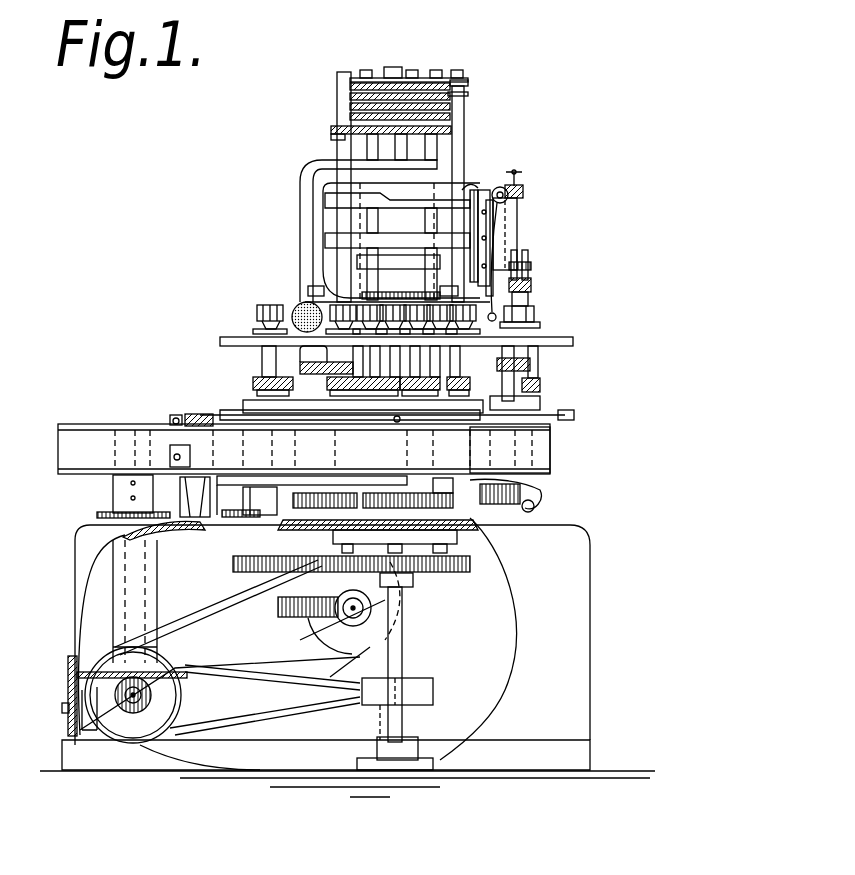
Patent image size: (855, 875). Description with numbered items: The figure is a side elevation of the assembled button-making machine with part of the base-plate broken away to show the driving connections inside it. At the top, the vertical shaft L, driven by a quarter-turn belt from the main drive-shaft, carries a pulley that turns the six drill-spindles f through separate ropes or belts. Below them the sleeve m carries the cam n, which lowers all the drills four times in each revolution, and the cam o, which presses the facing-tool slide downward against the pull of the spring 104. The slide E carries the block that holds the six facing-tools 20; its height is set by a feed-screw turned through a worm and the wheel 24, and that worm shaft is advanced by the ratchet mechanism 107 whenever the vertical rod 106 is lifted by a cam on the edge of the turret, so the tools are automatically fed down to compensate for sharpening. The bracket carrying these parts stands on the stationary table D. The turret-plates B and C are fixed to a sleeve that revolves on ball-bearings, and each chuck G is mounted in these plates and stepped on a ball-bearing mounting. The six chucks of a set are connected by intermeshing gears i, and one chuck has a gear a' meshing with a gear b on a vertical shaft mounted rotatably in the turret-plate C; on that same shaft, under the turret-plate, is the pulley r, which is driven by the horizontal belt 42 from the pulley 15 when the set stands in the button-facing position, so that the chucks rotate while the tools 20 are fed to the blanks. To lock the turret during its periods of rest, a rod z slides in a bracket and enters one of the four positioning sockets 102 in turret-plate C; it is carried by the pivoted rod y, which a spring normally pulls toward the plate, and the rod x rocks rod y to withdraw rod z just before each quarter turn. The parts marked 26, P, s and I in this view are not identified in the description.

The vertical shaft L is at (395, 72).
The drill-spindles f is at (438, 72).
The sleeve m is at (340, 165).
The cam n is at (355, 197).
The cam o is at (340, 235).
The spring 104 is at (468, 192).
The ratchet mechanism 107 is at (504, 186).
The wheel 24 is at (518, 190).
The rod 106 is at (497, 232).
The slide E is at (517, 245).
The facing-tool 20 is at (532, 268).
The nut 26 is at (540, 292).
The chuck G is at (533, 313).
The table D is at (300, 312).
The spools P is at (293, 316).
The turret-plate B is at (225, 343).
The turret-plate C is at (238, 413).
The gear b is at (272, 380).
The gear i is at (540, 388).
The gear a' is at (326, 414).
The pulley 15 is at (84, 424).
The rod y is at (166, 424).
The rod z is at (180, 418).
The positioning sockets 102 is at (395, 422).
The belt 42 is at (552, 455).
The pulley r is at (540, 483).
The rod x is at (135, 502).
The arc segment s is at (250, 478).
The support I is at (298, 476).